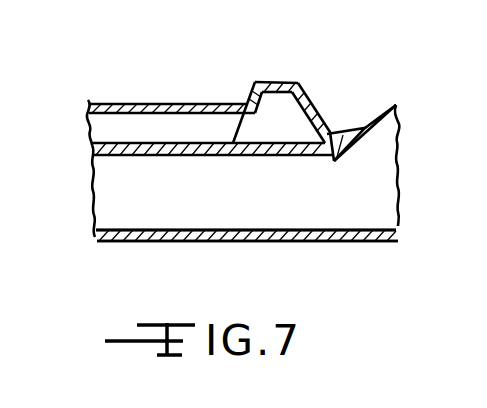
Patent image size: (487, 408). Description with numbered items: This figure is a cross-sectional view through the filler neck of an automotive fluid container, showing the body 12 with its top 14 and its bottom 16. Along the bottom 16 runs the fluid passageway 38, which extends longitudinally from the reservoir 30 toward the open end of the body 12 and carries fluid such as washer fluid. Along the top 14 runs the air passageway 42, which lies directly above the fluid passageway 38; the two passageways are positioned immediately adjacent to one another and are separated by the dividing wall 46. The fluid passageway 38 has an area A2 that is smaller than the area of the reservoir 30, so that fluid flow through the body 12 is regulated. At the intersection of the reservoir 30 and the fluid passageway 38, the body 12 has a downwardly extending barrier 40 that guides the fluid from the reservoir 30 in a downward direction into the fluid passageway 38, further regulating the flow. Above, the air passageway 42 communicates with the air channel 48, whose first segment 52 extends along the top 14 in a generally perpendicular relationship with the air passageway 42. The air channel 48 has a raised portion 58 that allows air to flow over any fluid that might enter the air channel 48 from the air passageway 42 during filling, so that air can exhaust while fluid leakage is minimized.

The body 12 is at (360, 242).
The top 14 is at (151, 103).
The bottom 16 is at (300, 242).
The reservoir 30 is at (388, 137).
The fluid passageway 38 is at (122, 222).
The barrier 40 is at (340, 151).
The air passageway 42 is at (107, 122).
The dividing wall 46 is at (124, 157).
The air channel 48 is at (318, 114).
The first segment 52 is at (304, 82).
The raised portion 58 is at (247, 96).
The area of the fluid passageway A2 is at (212, 220).